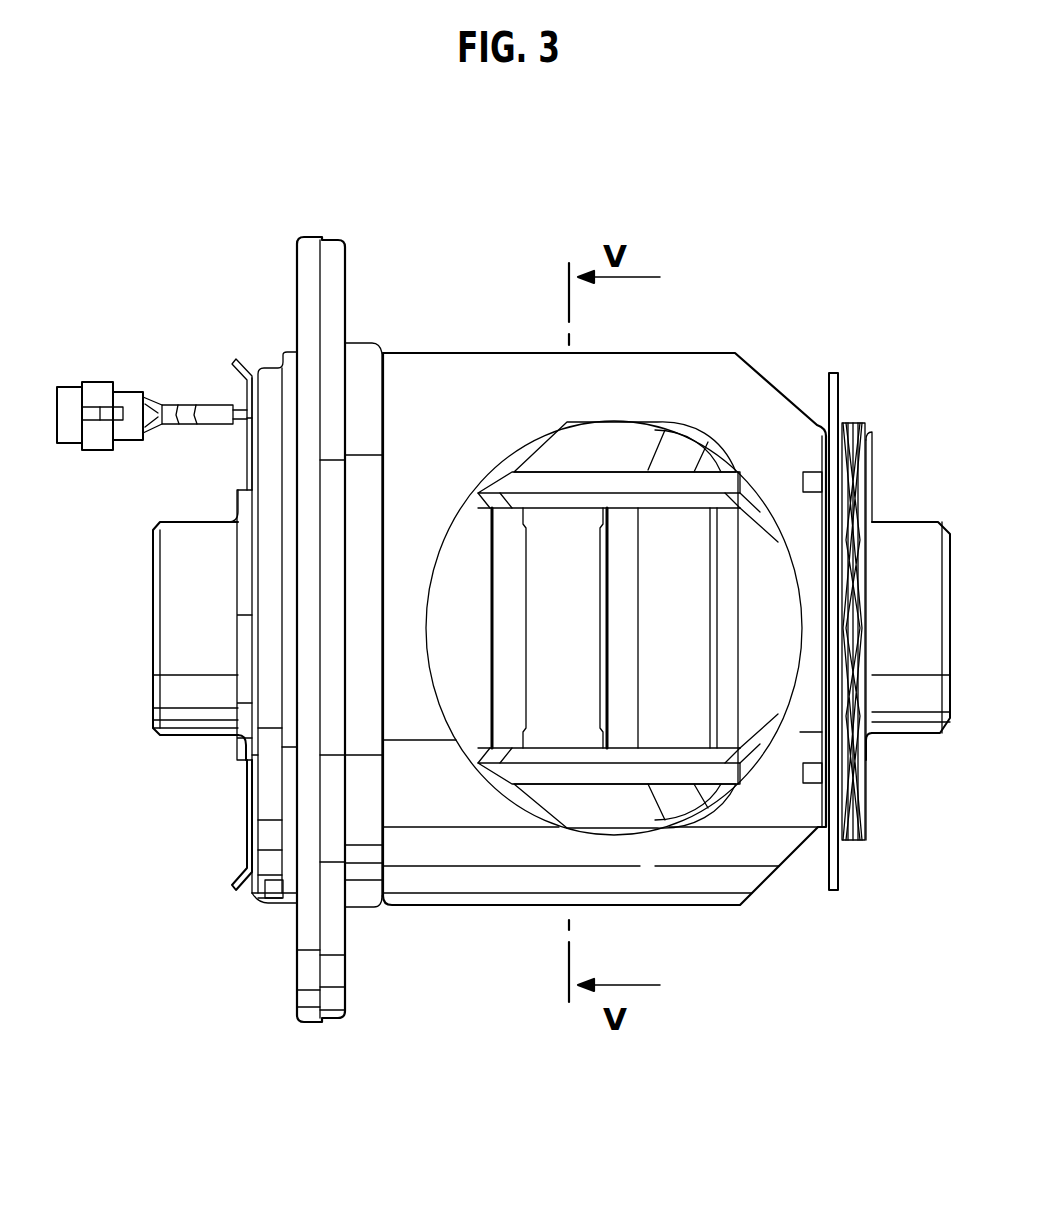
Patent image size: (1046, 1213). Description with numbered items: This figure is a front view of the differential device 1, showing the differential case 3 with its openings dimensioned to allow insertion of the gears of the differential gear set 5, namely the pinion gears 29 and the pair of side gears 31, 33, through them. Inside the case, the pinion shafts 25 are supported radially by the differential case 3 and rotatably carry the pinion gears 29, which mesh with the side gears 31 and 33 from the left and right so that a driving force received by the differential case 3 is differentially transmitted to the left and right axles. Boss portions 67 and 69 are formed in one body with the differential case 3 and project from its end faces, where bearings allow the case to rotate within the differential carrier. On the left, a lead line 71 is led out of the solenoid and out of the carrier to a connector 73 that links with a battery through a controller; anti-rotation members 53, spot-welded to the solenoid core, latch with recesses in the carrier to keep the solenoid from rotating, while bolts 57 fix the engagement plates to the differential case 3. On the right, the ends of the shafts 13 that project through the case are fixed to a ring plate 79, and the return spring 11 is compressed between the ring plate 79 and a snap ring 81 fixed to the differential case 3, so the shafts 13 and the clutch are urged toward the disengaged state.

The differential device 1 is at (849, 236).
The differential case 3 is at (321, 234).
The differential gear set 5 is at (703, 340).
The return spring 11 is at (846, 422).
The shafts 13 is at (513, 483).
The pinion shafts 25 is at (582, 640).
The pinion gears 29 is at (618, 466).
The side gear 31 is at (472, 640).
The side gear 33 is at (694, 640).
The anti-rotation members 53 is at (237, 366).
The bolts 57 is at (277, 903).
The boss portion 67 is at (191, 738).
The boss portion 69 is at (905, 745).
The lead line 71 is at (186, 423).
The connector 73 is at (88, 392).
The ring plate 79 is at (832, 372).
The snap ring 81 is at (856, 425).